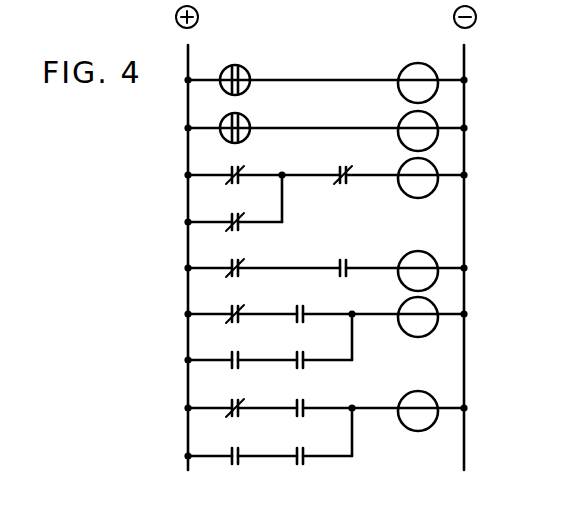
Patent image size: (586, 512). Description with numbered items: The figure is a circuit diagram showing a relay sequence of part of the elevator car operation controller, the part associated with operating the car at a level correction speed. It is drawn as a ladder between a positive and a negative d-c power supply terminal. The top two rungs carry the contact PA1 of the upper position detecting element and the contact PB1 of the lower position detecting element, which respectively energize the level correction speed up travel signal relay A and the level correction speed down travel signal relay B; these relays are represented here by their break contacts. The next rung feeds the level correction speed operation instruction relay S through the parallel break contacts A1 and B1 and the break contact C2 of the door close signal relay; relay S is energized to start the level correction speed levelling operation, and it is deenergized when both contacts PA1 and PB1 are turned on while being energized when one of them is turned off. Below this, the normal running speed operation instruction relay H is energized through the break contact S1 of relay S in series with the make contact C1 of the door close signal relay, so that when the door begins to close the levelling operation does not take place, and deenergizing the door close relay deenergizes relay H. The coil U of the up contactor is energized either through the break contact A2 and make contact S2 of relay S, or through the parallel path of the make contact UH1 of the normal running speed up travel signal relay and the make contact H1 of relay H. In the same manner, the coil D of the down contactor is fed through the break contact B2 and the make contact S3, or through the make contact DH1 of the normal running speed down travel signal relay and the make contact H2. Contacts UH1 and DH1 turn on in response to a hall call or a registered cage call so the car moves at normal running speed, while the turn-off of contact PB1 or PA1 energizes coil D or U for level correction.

The contact of upper position detecting element PA1 is at (236, 65).
The contact of lower position detecting element PB1 is at (232, 113).
The level correction speed up travel signal relay A is at (418, 83).
The level correction speed down travel signal relay B is at (418, 131).
The level correction speed operation instruction relay S is at (418, 178).
The normal running speed operation instruction relay H is at (418, 271).
The coil of up contactor U is at (418, 317).
The coil of down contactor D is at (418, 411).
The break contact of relay A A1 is at (231, 165).
The break contact of relay B B1 is at (231, 212).
The break contact of door close signal relay C2 is at (343, 165).
The break contact of relay S S1 is at (231, 258).
The make contact of door close signal relay C1 is at (343, 258).
The break contact of relay A A2 is at (231, 304).
The make contact of relay S S2 is at (301, 304).
The make contact of normal running speed up travel signal relay UH1 is at (234, 350).
The make contact of relay H H1 is at (299, 350).
The break contact of relay B B2 is at (231, 398).
The make contact of relay S S3 is at (300, 398).
The make contact of normal running speed down travel signal relay DH1 is at (236, 446).
The make contact of relay H H2 is at (300, 446).